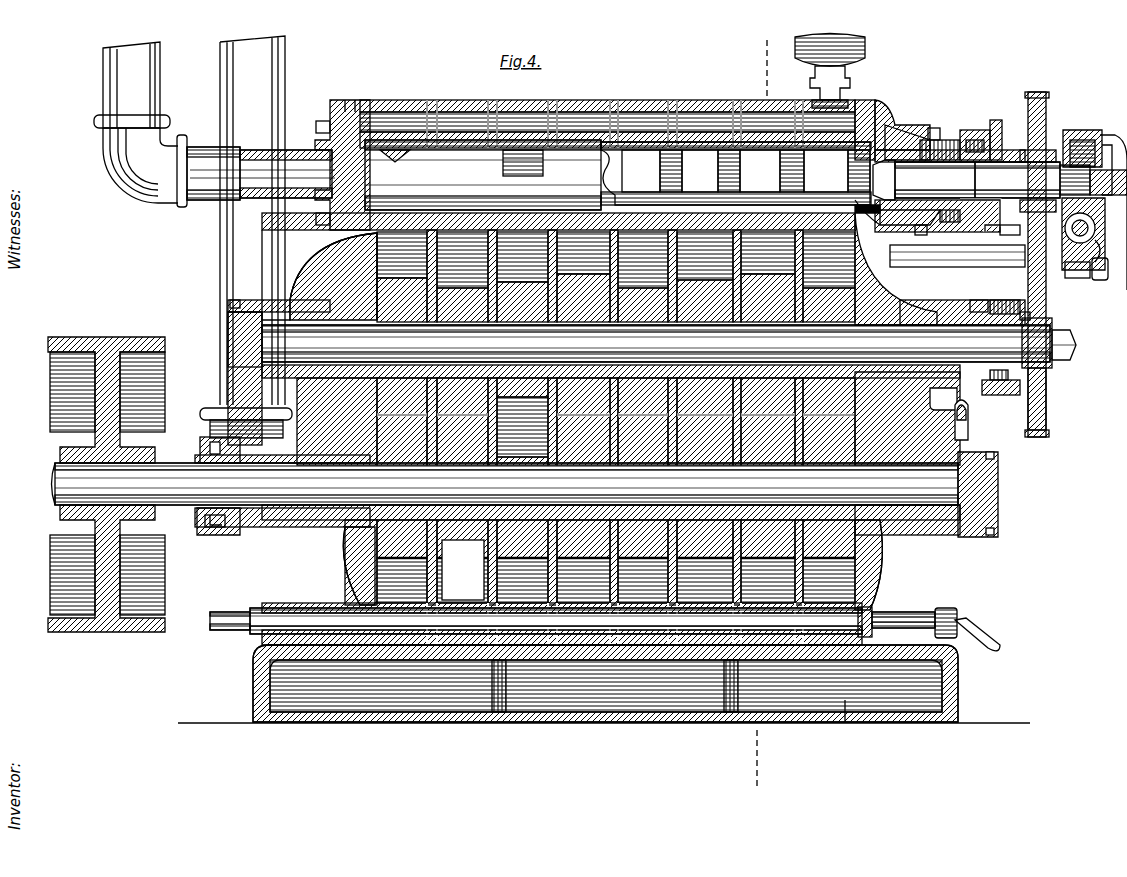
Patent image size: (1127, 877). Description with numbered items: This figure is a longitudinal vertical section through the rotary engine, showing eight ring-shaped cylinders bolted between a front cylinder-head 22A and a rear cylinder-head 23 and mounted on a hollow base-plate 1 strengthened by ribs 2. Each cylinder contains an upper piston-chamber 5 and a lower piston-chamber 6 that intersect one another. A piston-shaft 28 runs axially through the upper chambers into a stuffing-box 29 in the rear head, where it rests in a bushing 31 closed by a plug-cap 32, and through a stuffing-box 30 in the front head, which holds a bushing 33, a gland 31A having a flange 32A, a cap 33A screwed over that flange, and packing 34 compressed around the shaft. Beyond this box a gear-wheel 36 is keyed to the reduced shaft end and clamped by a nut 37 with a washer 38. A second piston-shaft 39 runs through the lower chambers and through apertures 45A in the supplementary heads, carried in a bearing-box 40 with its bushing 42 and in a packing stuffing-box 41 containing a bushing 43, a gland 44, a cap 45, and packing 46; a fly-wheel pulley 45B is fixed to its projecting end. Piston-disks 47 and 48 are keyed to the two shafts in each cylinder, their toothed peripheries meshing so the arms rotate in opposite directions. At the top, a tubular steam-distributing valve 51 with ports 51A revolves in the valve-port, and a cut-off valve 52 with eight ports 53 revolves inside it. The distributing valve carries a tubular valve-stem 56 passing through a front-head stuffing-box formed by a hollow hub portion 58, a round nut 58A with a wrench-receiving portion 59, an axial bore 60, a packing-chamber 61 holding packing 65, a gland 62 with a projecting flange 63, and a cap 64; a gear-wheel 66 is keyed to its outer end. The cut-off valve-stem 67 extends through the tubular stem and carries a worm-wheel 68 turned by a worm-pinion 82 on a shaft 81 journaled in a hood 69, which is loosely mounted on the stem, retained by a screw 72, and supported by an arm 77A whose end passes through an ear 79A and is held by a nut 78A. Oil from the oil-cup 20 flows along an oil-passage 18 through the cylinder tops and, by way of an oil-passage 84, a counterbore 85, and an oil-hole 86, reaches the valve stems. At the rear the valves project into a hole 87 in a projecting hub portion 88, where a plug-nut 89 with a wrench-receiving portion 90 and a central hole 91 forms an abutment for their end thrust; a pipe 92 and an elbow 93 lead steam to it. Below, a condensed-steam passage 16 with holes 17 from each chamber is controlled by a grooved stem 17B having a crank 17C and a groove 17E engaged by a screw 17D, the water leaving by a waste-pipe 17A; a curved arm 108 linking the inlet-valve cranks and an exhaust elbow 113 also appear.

The base-plate 1 is at (253, 685).
The ribs 2 is at (478, 722).
The piston-chamber 5 is at (318, 254).
The piston-chamber 6 is at (350, 578).
The condensed-steam passage 16 is at (378, 660).
The hole 17 is at (456, 590).
The waste-pipe 17A is at (230, 612).
The stem 17B is at (902, 612).
The crank 17C is at (968, 625).
The screw 17D is at (845, 722).
The groove 17E is at (880, 605).
The oil-passage 18 is at (395, 118).
The oil-cup 20 is at (865, 50).
The front cylinder-head 22A is at (890, 570).
The rear cylinder-head 23 is at (345, 548).
The piston-shaft 28 is at (656, 343).
The stuffing-box 29 is at (292, 302).
The stuffing-box 30 is at (945, 312).
The bushing 31 is at (300, 305).
The gland 31A is at (1050, 318).
The plug-cap 32 is at (228, 320).
The flange 32A is at (1005, 396).
The bushing 33 is at (907, 418).
The cap 33A is at (998, 300).
The packing 34 is at (972, 300).
The gear-wheel 36 is at (1046, 398).
The nut 37 is at (1076, 346).
The washer 38 is at (1052, 325).
The piston-shaft 39 is at (505, 484).
The bearing-box 40 is at (935, 535).
The stuffing-box 41 is at (276, 530).
The bushing 42 is at (928, 470).
The bushing 43 is at (335, 470).
The gland 44 is at (190, 513).
The cap 45 is at (212, 535).
The apertures 45A is at (430, 470).
The fly-wheel pulley 45B is at (103, 633).
The packing 46 is at (250, 470).
The piston-disk 47 is at (400, 320).
The piston-disk 48 is at (386, 522).
The steam-distributing valve 51 is at (483, 175).
The ports 51A is at (400, 140).
The cut-off valve 52 is at (641, 171).
The ports 53 is at (765, 171).
The tubular valve-stem 56 is at (1005, 158).
The hollow hub portion 58 is at (910, 128).
The round nut 58A is at (930, 222).
The wrench-receiving portion 59 is at (938, 128).
The axial bore 60 is at (905, 170).
The packing-chamber 61 is at (945, 140).
The gland 62 is at (993, 205).
The projecting flange 63 is at (972, 130).
The cap 64 is at (998, 130).
The packing 65 is at (946, 162).
The gear-wheel 66 is at (1046, 120).
The valve-stem 67 is at (1017, 180).
The worm-wheel 68 is at (1085, 130).
The hood 69 is at (1110, 140).
The screw 72 is at (1094, 234).
The arm 77A is at (930, 258).
The nut 78A is at (1100, 280).
The ear 79A is at (1075, 278).
The shaft 81 is at (1100, 240).
The worm-pinion 82 is at (1030, 242).
The oil-passage 84 is at (890, 112).
The counterbore 85 is at (885, 232).
The oil-hole 86 is at (866, 110).
The hole 87 is at (357, 100).
The projecting hub portion 88 is at (336, 114).
The plug-nut 89 is at (318, 217).
The wrench-receiving portion 90 is at (320, 121).
The hole 91 is at (345, 178).
The pipe 92 is at (192, 205).
The elbow 93 is at (143, 190).
The arm 108 is at (968, 430).
The elbow 113 is at (210, 428).